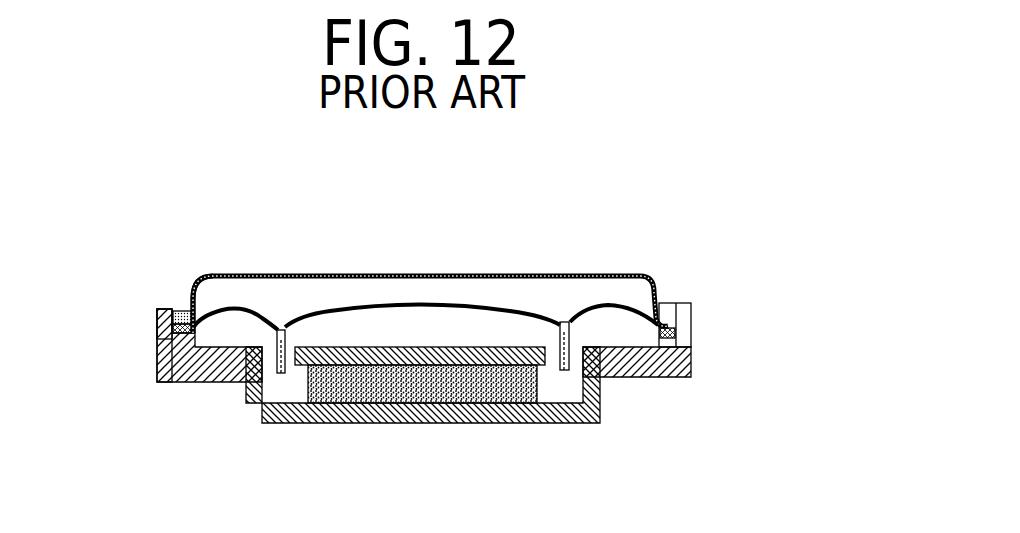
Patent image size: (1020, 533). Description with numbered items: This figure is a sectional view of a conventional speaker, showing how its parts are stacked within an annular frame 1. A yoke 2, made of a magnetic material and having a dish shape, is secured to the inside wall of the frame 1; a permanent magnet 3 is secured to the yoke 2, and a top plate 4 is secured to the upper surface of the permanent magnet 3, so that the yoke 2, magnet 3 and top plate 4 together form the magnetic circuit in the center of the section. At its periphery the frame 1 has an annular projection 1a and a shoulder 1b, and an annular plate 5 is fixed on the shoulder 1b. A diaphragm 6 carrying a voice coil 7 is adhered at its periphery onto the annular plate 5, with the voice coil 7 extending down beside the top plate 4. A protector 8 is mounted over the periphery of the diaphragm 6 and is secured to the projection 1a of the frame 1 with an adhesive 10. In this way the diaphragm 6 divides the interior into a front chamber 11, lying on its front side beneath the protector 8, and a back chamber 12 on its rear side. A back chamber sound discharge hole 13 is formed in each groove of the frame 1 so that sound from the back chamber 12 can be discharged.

The frame 1 is at (183, 372).
The peripheral annular projection 1a is at (157, 322).
The shoulder 1b is at (210, 278).
The yoke 2 is at (598, 423).
The permanent magnet 3 is at (437, 378).
The top plate 4 is at (452, 340).
The annular plate 5 is at (157, 340).
The diaphragm 6 is at (495, 310).
The voice coil 7 is at (282, 376).
The protector 8 is at (288, 274).
The adhesive 10 is at (178, 308).
The front chamber 11 is at (330, 290).
The back chamber 12 is at (397, 335).
The back chamber sound discharge hole 13 is at (692, 338).